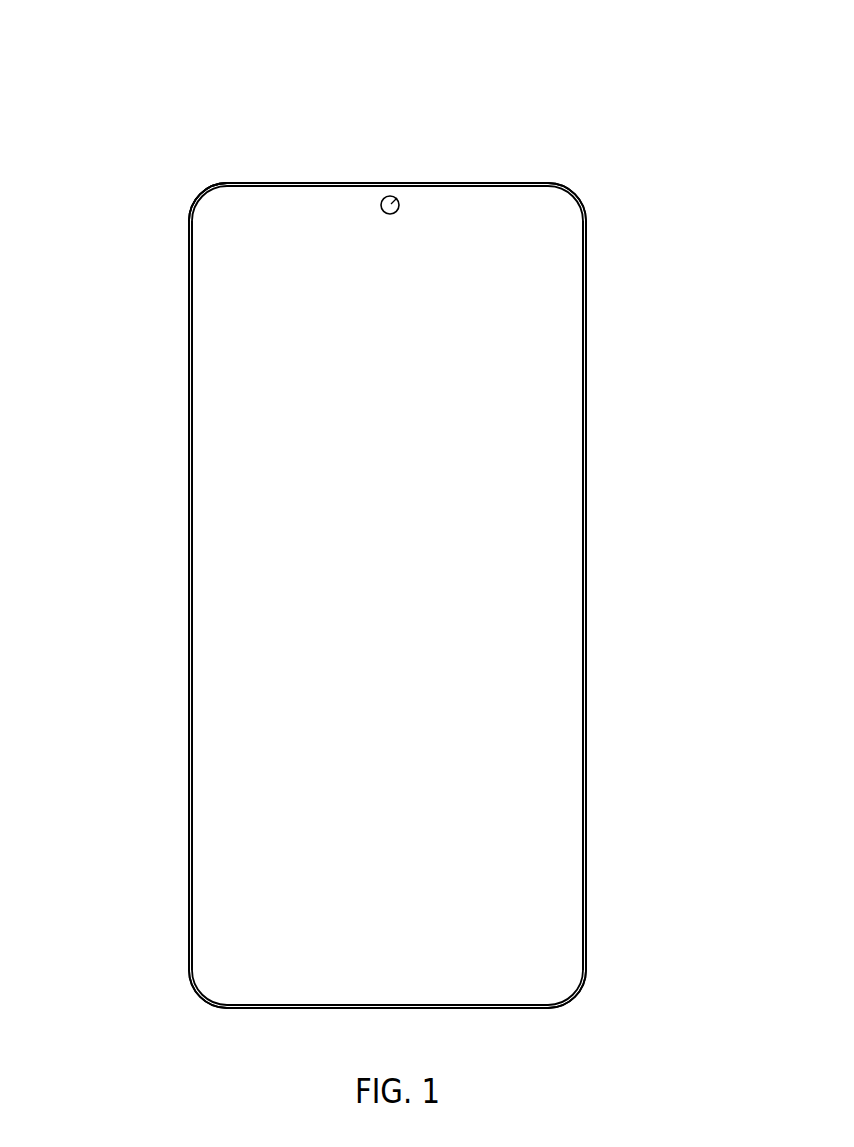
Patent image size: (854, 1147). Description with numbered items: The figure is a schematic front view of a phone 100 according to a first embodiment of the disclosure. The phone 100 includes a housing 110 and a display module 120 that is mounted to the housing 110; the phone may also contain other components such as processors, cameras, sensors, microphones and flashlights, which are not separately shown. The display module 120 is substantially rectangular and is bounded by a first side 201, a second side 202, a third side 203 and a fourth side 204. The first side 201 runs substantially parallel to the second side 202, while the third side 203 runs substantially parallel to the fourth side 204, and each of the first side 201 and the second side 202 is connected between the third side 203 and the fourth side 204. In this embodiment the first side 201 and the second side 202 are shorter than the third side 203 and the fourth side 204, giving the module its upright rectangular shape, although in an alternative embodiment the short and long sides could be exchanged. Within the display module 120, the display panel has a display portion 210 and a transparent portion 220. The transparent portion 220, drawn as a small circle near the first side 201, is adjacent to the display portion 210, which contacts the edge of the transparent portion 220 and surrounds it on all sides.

The phone 100 is at (352, 32).
The housing 110 is at (192, 560).
The display module 120 is at (220, 193).
The first side 201 is at (528, 208).
The second side 202 is at (520, 992).
The third side 203 is at (572, 637).
The fourth side 204 is at (213, 378).
The display portion 210 is at (393, 438).
The transparent portion 220 is at (396, 199).